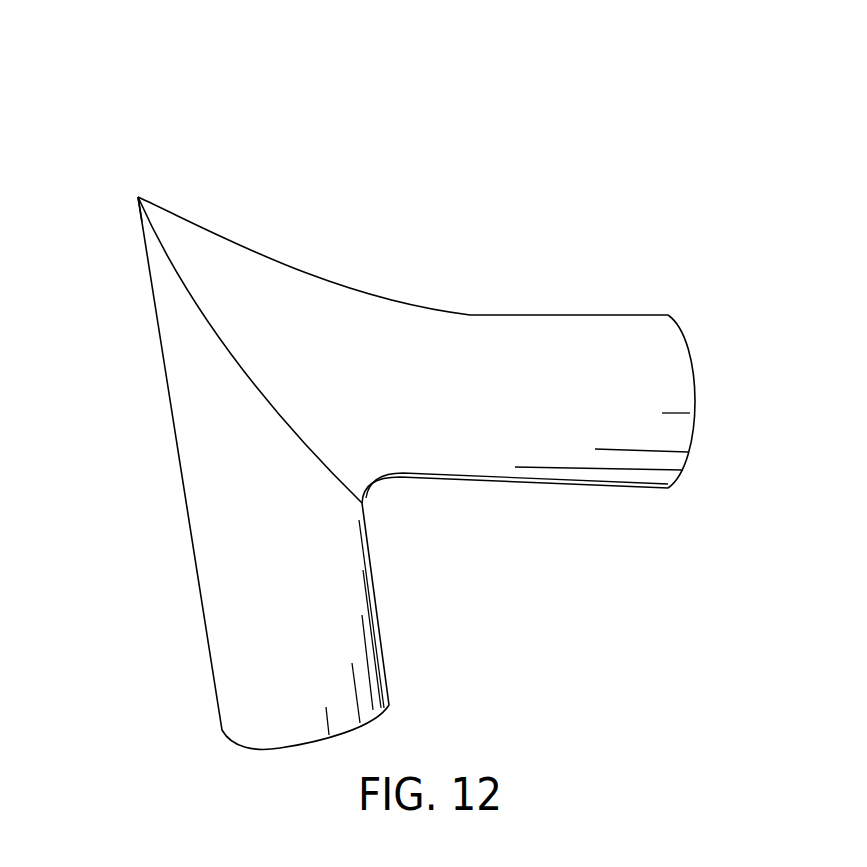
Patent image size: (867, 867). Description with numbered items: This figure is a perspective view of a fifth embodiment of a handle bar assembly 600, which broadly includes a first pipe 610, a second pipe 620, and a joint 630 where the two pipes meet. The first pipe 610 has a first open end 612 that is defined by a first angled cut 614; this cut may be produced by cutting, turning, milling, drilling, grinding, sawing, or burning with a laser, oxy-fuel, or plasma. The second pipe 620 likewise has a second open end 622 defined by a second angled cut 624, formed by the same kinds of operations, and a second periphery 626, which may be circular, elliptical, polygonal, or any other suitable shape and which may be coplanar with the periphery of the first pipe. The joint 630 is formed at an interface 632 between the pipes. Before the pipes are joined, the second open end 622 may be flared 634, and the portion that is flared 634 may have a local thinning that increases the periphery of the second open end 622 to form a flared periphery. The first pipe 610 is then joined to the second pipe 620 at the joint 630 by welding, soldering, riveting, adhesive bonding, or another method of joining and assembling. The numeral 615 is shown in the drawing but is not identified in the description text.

The handle bar assembly 600 is at (405, 78).
The first pipe 610 is at (230, 683).
The second pipe 620 is at (660, 342).
The joint 630 is at (138, 197).
The interface 632 is at (138, 197).
The flared portion 634 is at (213, 233).
The first open end 612 is at (182, 273).
The first angled cut 614 is at (200, 307).
The third layer 615 is at (220, 340).
The second open end 622 is at (245, 372).
The second angled cut 624 is at (270, 405).
The second periphery 626 is at (297, 438).